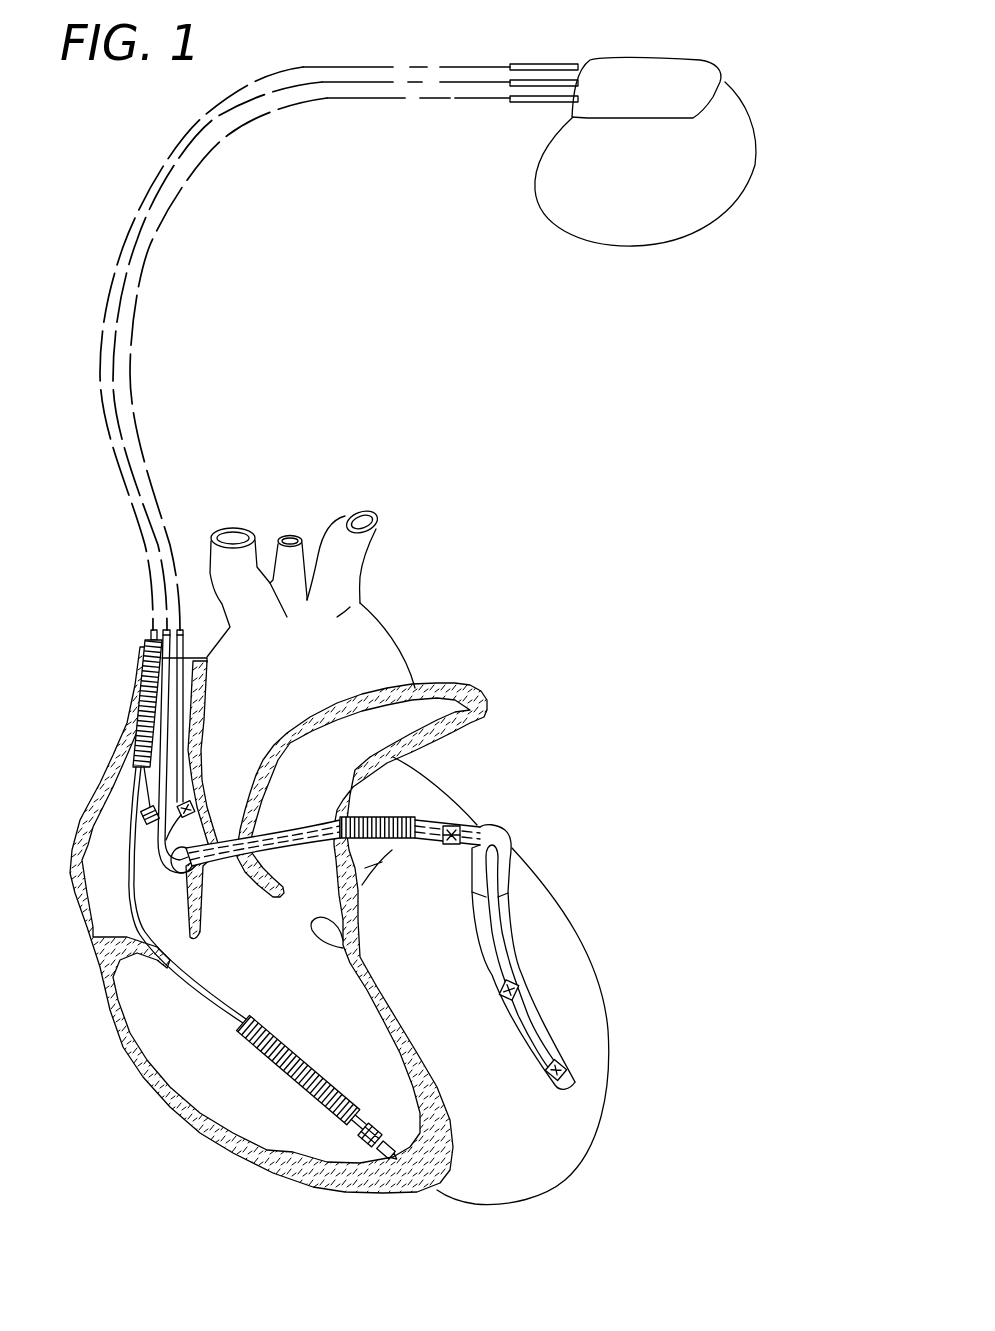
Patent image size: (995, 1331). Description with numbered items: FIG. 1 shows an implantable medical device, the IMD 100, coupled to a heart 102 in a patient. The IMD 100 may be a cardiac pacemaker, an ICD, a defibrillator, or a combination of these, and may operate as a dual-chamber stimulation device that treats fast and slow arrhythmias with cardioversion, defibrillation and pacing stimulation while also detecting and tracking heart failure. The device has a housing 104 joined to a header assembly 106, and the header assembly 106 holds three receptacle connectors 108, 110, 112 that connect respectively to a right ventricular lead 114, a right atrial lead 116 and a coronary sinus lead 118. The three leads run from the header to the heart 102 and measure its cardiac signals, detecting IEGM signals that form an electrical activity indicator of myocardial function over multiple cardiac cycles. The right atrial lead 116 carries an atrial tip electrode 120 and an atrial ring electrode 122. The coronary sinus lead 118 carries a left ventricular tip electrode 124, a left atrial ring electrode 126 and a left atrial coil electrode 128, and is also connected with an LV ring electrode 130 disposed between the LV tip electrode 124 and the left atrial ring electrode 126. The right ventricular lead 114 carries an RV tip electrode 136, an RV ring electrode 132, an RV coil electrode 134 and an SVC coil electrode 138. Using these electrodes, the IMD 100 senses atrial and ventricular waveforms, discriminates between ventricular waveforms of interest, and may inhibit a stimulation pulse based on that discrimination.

The IMD 100 is at (736, 52).
The heart 102 is at (552, 1137).
The housing 104 is at (723, 169).
The header assembly 106 is at (660, 70).
The receptacle connector 108 is at (521, 64).
The receptacle connector 110 is at (547, 80).
The receptacle connector 112 is at (544, 102).
The right ventricular lead 114 is at (451, 67).
The right atrial lead 116 is at (374, 83).
The coronary sinus lead 118 is at (325, 98).
The atrial tip electrode 120 is at (194, 795).
The atrial ring electrode 122 is at (147, 815).
The left ventricular tip electrode 124 is at (572, 1080).
The left atrial ring electrode 126 is at (477, 825).
The left atrial coil electrode 128 is at (417, 815).
The LV ring electrode 130 is at (520, 990).
The RV ring electrode 132 is at (367, 1137).
The RV coil electrode 134 is at (290, 1078).
The RV tip electrode 136 is at (383, 1157).
The SVC coil electrode 138 is at (143, 690).